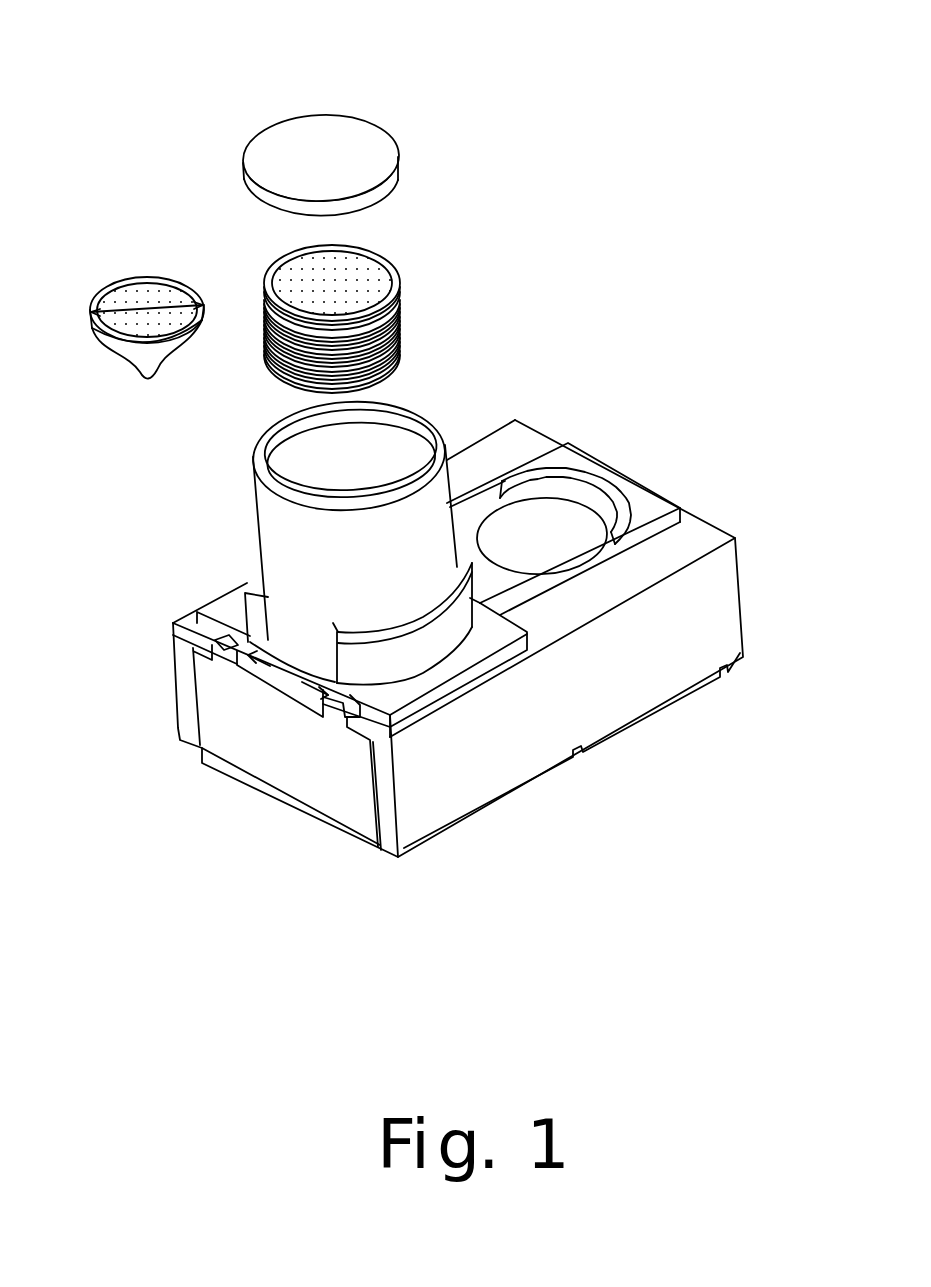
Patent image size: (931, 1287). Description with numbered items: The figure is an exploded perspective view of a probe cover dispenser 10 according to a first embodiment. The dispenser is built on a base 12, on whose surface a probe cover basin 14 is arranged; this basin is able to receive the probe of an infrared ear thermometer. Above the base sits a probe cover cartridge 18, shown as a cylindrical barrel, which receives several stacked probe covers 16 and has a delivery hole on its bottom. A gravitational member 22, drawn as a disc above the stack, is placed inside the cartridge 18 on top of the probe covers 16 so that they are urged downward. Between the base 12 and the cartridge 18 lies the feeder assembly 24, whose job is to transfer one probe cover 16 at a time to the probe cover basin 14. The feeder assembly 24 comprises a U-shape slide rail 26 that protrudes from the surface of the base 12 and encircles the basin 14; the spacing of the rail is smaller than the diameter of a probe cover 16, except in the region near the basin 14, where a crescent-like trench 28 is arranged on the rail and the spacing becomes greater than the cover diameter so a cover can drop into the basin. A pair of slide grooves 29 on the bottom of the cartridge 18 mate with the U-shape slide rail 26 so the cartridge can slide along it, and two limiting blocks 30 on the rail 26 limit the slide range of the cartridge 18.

The probe cover dispenser 10 is at (583, 121).
The base 12 is at (528, 755).
The probe cover basin 14 is at (583, 540).
The probe covers 16 is at (400, 285).
The probe cover cartridge 18 is at (267, 531).
The gravitational member 22 is at (270, 140).
The feeder assembly 24 is at (278, 703).
The U-shape slide rail 26 is at (540, 576).
The crescent-like trench 28 is at (496, 500).
The slide groove 29 is at (237, 652).
The limiting blocks 30 is at (195, 633).